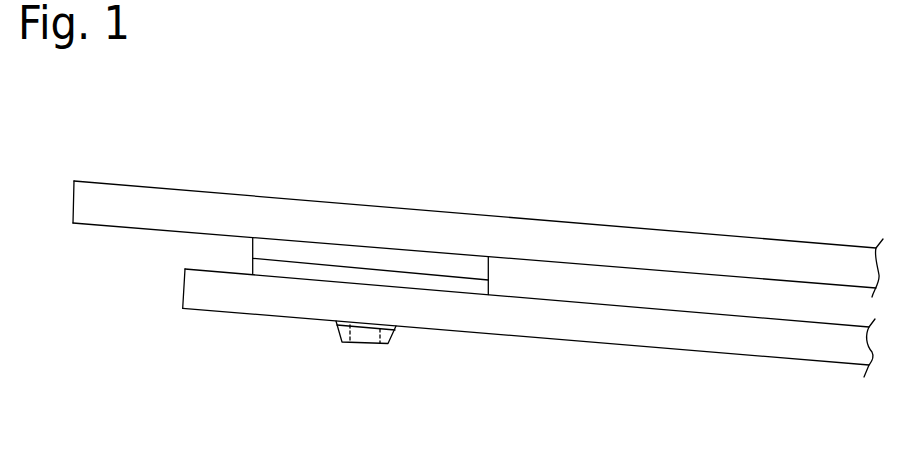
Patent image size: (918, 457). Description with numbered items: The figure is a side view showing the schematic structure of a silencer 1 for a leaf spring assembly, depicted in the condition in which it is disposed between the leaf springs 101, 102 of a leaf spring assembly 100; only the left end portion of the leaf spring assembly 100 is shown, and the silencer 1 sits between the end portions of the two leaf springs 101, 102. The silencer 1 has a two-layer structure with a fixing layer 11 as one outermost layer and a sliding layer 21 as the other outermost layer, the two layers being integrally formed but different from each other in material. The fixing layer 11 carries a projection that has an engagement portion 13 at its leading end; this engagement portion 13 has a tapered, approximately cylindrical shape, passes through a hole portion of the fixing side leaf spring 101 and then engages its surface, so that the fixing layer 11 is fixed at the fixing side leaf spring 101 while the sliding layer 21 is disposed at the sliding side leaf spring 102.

The leaf spring assembly 100 is at (773, 212).
The fixing side leaf spring 101 is at (712, 337).
The sliding side leaf spring 102 is at (672, 248).
The sliding layer 21 is at (287, 250).
The fixing layer 11 is at (287, 272).
The silencer 1 is at (363, 350).
The engagement portion 13 is at (397, 347).